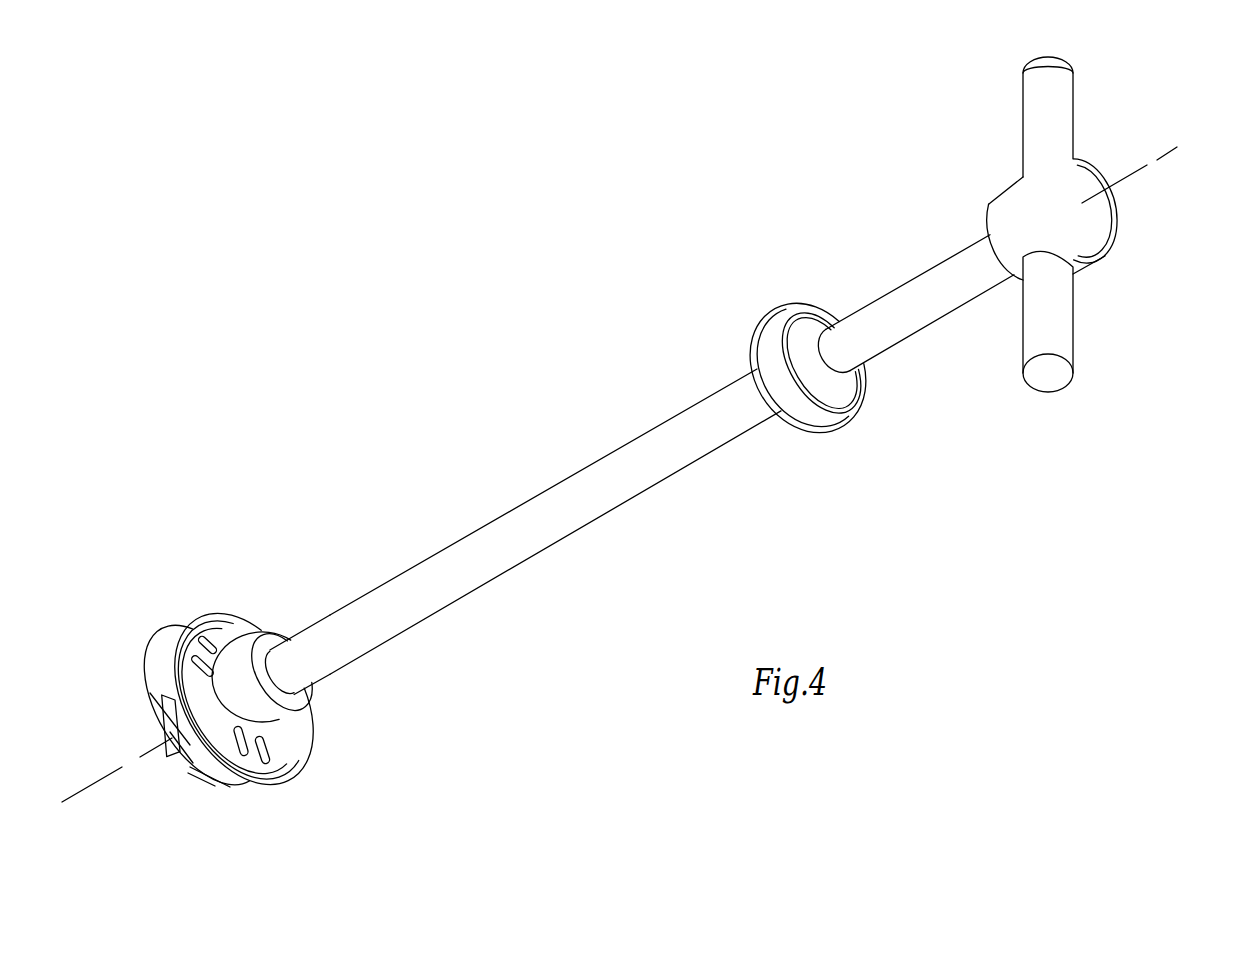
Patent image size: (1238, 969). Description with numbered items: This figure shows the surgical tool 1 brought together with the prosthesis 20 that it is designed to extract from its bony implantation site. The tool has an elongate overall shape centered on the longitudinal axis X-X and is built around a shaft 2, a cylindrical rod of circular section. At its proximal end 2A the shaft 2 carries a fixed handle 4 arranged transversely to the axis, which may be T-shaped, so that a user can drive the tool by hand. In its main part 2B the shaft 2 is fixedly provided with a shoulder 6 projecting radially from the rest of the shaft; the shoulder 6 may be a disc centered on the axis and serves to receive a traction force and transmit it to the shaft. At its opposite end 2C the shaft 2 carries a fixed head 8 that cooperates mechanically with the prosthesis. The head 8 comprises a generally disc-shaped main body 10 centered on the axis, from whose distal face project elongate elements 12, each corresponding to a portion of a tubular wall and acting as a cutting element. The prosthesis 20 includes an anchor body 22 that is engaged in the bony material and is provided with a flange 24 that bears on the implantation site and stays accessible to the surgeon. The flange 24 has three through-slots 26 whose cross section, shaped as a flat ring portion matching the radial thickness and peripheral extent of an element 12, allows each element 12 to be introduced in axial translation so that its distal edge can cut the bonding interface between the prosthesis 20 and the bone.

The surgical tool 1 is at (432, 277).
The shaft 2 is at (537, 552).
The proximal end of the shaft 2A is at (985, 243).
The main part of the shaft 2B is at (632, 460).
The end of the shaft 2C is at (270, 633).
The handle 4 is at (1048, 113).
The shoulder 6 is at (830, 420).
The head 8 is at (232, 631).
The main body 10 is at (268, 728).
The elements 12 is at (180, 722).
The prosthesis 20 is at (164, 642).
The anchor body 22 is at (192, 738).
The flange 24 is at (273, 760).
The through-slots 26 is at (223, 764).